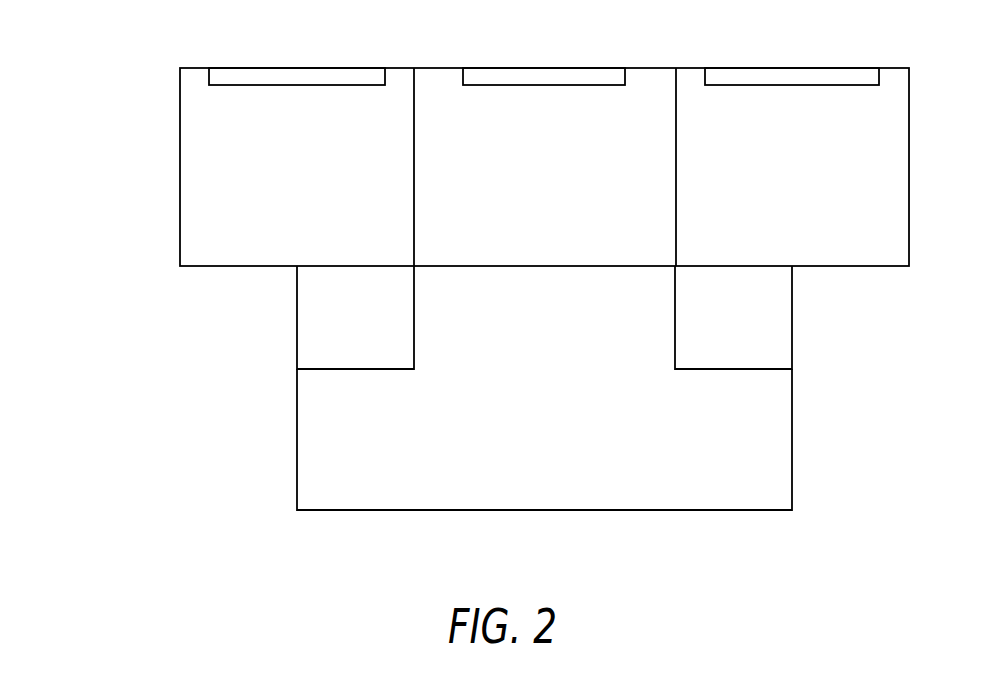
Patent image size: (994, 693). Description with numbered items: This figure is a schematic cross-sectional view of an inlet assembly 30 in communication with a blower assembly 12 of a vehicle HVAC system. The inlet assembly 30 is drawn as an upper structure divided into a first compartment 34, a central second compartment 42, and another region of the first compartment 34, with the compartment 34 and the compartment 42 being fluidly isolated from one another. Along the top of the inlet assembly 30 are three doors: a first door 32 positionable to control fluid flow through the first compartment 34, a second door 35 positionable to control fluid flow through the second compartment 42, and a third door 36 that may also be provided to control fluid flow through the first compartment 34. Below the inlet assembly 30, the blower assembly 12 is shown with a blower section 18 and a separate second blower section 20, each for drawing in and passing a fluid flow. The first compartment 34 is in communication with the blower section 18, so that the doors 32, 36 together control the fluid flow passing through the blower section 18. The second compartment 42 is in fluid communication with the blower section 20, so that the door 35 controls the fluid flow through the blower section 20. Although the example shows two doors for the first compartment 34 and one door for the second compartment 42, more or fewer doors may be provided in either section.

The inlet assembly 30 is at (115, 118).
The first door 32 is at (300, 73).
The second door 35 is at (545, 73).
The third door 36 is at (793, 73).
The first compartment 34 is at (302, 178).
The second compartment 42 is at (550, 178).
The blower assembly 12 is at (203, 413).
The blower section 18 is at (361, 331).
The second blower section 20 is at (550, 421).